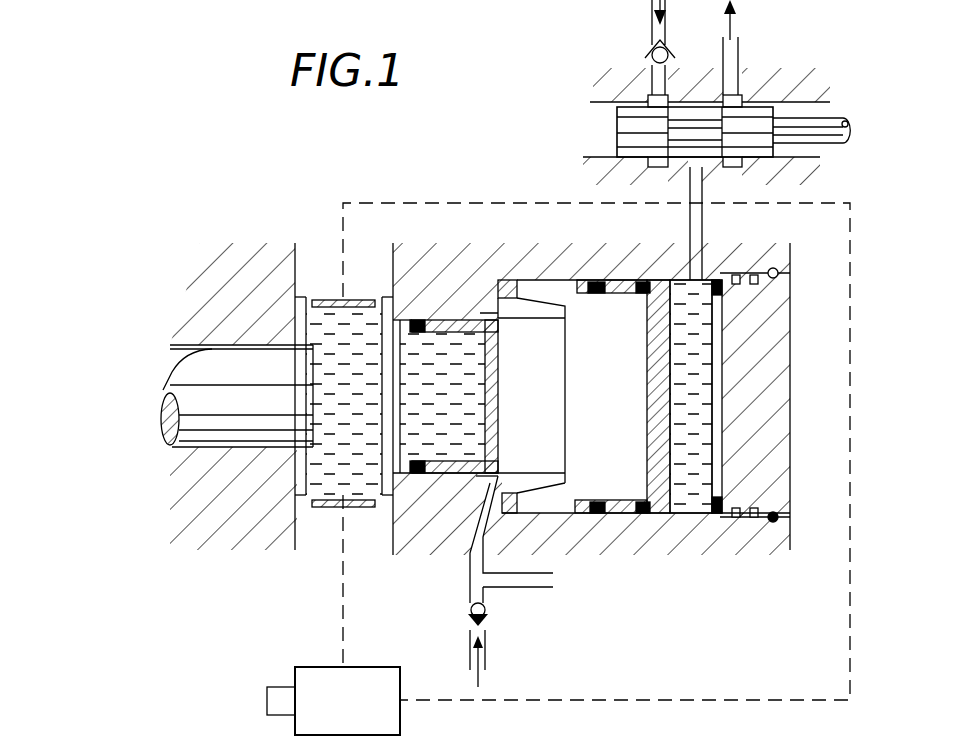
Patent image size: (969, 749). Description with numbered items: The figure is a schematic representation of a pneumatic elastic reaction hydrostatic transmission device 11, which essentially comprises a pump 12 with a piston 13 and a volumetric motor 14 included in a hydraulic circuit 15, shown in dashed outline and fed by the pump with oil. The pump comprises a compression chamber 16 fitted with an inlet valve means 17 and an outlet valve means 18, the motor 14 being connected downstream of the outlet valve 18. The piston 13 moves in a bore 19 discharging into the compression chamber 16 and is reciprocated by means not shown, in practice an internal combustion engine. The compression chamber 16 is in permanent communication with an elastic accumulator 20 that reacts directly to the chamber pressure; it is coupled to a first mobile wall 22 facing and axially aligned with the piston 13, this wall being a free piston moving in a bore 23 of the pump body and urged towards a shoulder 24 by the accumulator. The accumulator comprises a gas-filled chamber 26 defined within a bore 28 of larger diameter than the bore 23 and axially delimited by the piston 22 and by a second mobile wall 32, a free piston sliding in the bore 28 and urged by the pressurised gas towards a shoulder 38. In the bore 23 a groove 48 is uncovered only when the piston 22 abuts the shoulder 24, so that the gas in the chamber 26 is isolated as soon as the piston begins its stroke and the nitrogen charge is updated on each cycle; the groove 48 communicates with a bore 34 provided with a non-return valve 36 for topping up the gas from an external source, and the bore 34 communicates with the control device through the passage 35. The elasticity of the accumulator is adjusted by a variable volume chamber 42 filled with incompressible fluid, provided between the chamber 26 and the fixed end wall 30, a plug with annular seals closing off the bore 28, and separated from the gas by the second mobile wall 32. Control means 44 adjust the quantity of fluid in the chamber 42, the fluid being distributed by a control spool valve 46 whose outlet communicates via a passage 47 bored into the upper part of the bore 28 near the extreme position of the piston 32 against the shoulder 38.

The hydrostatic transmission device 11 is at (320, 268).
The pump 12 is at (233, 333).
The piston 13 is at (197, 405).
The volumetric motor 14 is at (356, 712).
The hydraulic circuit 15 is at (343, 618).
The compression chamber 16 is at (340, 450).
The inlet valve means 17 is at (352, 298).
The outlet valve means 18 is at (330, 507).
The bore 19 is at (167, 367).
The elastic accumulator 20 is at (633, 520).
The first mobile wall 22 is at (490, 377).
The bore 23 is at (462, 327).
The shoulder 24 is at (427, 320).
The chamber 26 is at (527, 347).
The bore 28 is at (678, 290).
The fixed end wall 30 is at (768, 382).
The second mobile wall 32 is at (658, 392).
The bore 34 is at (477, 557).
The passage 35 is at (553, 580).
The non-return valve 36 is at (471, 607).
The shoulder 38 is at (715, 277).
The variable volume chamber 42 is at (683, 333).
The control means 44 is at (773, 95).
The control spool valve 46 is at (637, 123).
The passage 47 is at (695, 178).
The groove 48 is at (477, 483).